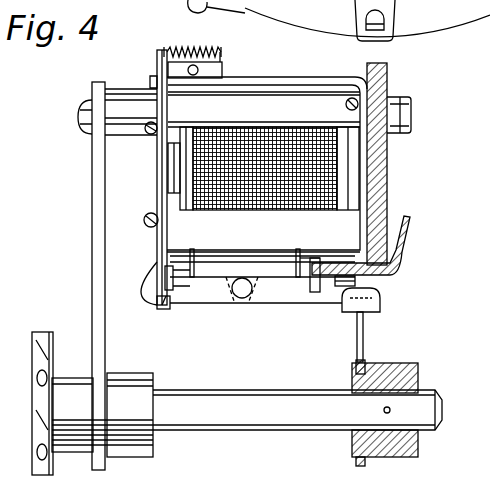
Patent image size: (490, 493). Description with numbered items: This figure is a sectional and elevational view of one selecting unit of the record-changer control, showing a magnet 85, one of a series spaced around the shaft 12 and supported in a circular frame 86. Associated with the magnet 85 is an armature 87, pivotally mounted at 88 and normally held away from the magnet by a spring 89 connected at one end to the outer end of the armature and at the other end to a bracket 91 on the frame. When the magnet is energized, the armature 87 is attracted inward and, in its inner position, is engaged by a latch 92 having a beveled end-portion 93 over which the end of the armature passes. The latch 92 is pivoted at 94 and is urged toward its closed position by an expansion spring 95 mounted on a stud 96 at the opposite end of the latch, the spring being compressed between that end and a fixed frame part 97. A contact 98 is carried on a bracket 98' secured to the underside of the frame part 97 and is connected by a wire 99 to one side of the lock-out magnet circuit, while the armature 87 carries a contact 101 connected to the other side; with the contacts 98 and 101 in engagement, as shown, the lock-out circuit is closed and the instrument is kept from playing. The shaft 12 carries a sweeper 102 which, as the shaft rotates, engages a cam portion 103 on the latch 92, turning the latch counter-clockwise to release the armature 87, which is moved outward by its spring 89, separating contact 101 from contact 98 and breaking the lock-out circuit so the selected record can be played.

The shaft 12 is at (232, 390).
The magnet 85 is at (252, 210).
The circular frame 86 is at (385, 151).
The armature 87 is at (162, 197).
The pivot 88 is at (153, 80).
The spring 89 is at (200, 48).
The bracket 91 is at (223, 63).
The latch 92 is at (226, 303).
The beveled end-portion 93 is at (155, 270).
The pivot 94 is at (249, 300).
The expansion spring 95 is at (357, 281).
The stud 96 is at (343, 306).
The fixed frame part 97 is at (333, 256).
The contact 98 is at (174, 320).
The bracket 98' is at (187, 283).
The wire 99 is at (410, 222).
The contact 101 is at (158, 308).
The sweeper 102 is at (364, 331).
The cam portion 103 is at (372, 322).